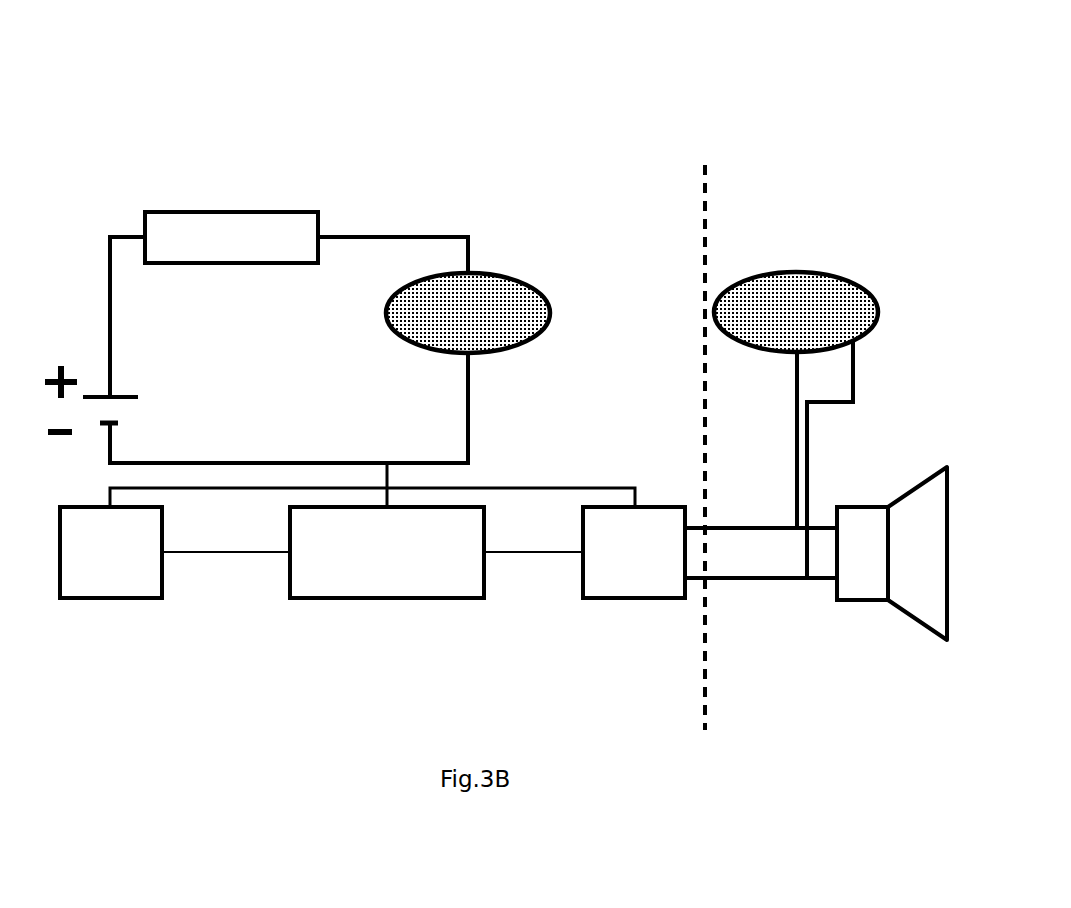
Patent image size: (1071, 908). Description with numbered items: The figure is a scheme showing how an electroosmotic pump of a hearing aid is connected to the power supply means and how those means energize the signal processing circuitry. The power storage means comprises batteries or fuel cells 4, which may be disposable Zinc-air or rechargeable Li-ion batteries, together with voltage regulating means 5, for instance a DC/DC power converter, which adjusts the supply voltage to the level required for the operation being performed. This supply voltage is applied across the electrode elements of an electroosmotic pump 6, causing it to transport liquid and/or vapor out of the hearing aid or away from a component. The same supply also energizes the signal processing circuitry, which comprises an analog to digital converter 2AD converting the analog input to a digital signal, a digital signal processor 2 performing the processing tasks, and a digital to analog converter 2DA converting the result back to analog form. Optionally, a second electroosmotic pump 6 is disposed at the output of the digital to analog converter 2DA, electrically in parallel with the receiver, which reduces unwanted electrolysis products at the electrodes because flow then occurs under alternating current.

The batteries or fuel cells 4 is at (77, 350).
The voltage regulating means 5 is at (200, 243).
The electroosmotic pump 6 is at (483, 313).
The processor 2 is at (345, 562).
The analog to digital converter 2AD is at (108, 567).
The digital to analog converter 2DA is at (617, 562).